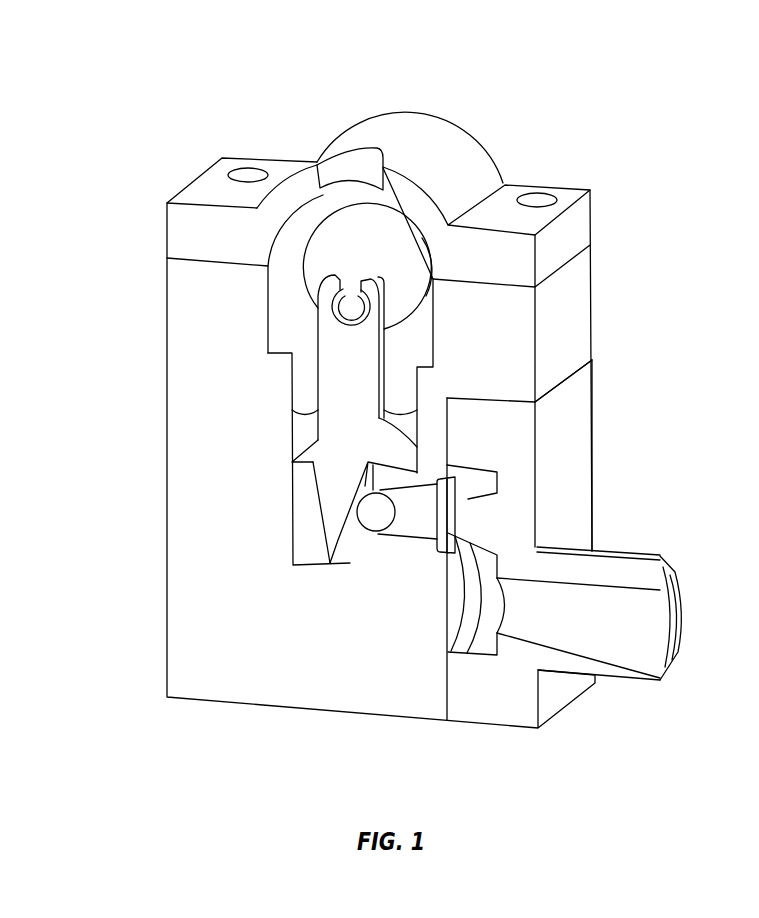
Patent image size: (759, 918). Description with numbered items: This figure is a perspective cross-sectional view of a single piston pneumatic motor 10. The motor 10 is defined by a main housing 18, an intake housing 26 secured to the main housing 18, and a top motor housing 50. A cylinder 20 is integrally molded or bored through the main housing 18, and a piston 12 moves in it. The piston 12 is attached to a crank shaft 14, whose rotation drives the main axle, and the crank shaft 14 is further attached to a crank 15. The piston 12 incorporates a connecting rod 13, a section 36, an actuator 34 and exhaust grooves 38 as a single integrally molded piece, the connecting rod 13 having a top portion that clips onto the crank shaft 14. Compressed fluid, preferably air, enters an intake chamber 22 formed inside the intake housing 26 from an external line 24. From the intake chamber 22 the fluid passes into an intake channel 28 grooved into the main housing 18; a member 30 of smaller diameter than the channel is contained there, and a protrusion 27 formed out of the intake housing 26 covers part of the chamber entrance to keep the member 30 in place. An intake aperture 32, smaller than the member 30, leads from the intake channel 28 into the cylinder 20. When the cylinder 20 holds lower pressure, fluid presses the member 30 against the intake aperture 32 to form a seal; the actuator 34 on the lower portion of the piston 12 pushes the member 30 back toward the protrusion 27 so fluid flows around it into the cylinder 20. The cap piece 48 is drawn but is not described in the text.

The pneumatic motor 10 is at (587, 89).
The piston 12 is at (337, 350).
The connecting rod 13 is at (367, 380).
The crank shaft 14 is at (350, 302).
The crank 15 is at (362, 238).
The main housing 18 is at (182, 462).
The cylinder 20 is at (293, 408).
The intake chamber 22 is at (466, 645).
The external line 24 is at (657, 623).
The intake housing 26 is at (573, 423).
The protrusion 27 is at (483, 508).
The intake channel 28 is at (423, 522).
The member 30 is at (350, 527).
The intake aperture 32 is at (350, 545).
The actuator 34 is at (313, 470).
The section 36 is at (308, 432).
The exhaust grooves 38 is at (417, 445).
The cap 48 is at (337, 160).
The top motor housing 50 is at (570, 198).